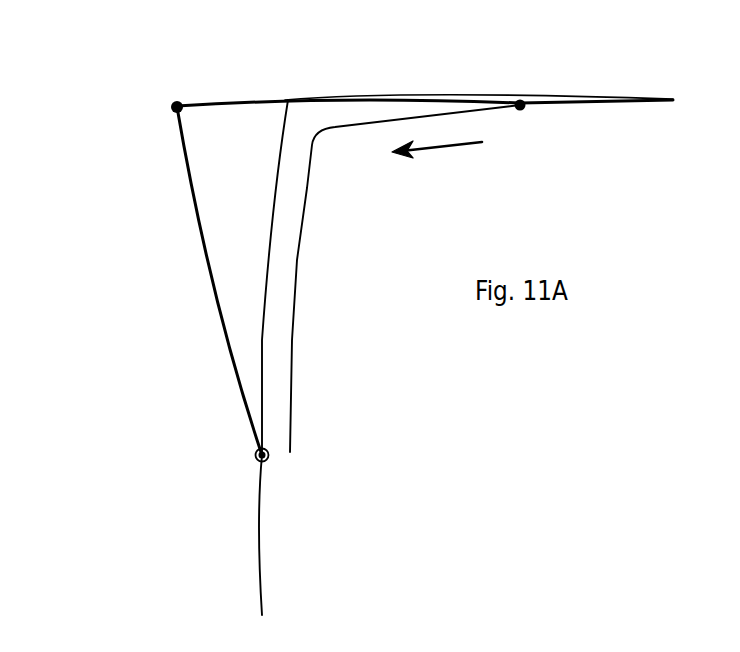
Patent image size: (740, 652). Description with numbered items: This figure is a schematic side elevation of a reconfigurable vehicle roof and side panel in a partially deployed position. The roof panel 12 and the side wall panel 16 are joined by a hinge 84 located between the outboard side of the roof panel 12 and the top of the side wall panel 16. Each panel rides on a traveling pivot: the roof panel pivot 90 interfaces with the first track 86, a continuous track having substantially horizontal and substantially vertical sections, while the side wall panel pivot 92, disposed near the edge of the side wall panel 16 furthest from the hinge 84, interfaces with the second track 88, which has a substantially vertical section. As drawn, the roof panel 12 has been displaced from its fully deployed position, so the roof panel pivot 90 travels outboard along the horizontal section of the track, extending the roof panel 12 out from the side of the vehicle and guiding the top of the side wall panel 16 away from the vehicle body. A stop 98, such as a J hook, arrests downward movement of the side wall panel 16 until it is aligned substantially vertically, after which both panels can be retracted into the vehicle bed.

The roof panel 12 is at (267, 100).
The side wall panel 16 is at (195, 225).
The hinge 84 is at (170, 108).
The first track 86 is at (295, 323).
The second track 88 is at (263, 303).
The roof panel pivot 90 is at (521, 108).
The side wall panel pivot 92 is at (266, 461).
The stop 98 is at (270, 455).